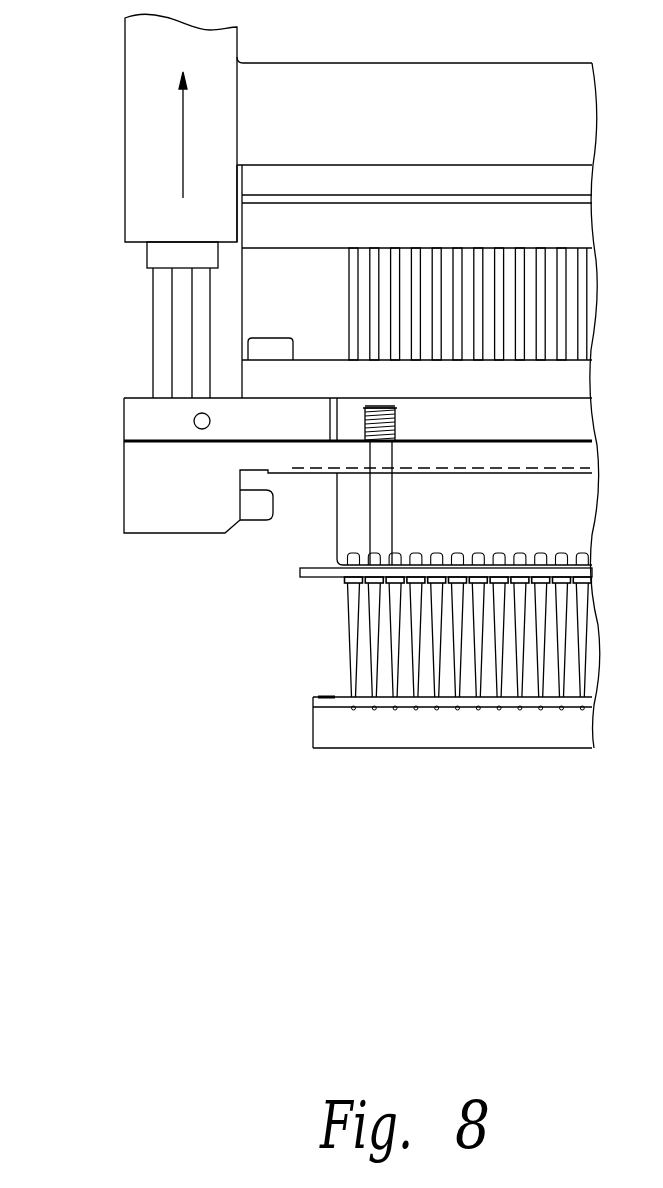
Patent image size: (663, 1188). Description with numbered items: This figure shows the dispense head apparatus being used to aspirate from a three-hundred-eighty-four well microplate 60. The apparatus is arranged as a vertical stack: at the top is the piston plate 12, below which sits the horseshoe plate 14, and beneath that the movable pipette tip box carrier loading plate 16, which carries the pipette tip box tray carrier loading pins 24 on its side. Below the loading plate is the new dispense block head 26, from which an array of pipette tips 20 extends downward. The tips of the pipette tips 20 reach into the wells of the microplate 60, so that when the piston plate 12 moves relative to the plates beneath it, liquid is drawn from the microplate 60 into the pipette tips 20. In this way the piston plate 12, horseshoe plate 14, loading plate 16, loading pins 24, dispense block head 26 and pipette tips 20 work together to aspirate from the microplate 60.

The piston plate 12 is at (125, 103).
The horseshoe plate 14 is at (124, 420).
The movable pipette tip box carrier loading plate 16 is at (124, 487).
The pipette tips 20 is at (348, 640).
The pipette tip box tray carrier loading pins 24 is at (255, 520).
The dispense block head 26 is at (336, 518).
The 384 microplate 60 is at (313, 727).